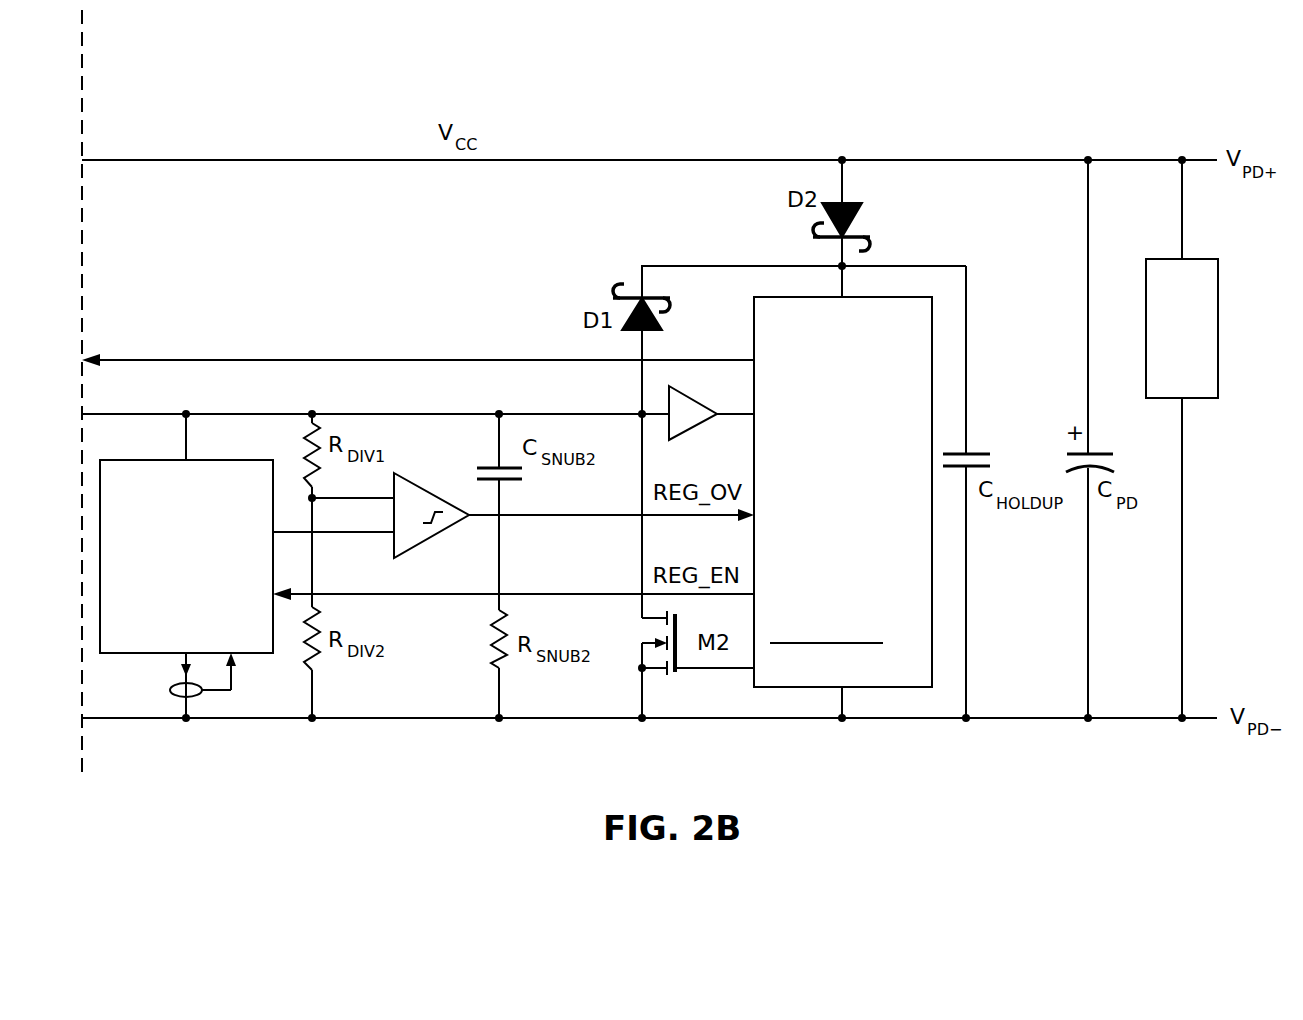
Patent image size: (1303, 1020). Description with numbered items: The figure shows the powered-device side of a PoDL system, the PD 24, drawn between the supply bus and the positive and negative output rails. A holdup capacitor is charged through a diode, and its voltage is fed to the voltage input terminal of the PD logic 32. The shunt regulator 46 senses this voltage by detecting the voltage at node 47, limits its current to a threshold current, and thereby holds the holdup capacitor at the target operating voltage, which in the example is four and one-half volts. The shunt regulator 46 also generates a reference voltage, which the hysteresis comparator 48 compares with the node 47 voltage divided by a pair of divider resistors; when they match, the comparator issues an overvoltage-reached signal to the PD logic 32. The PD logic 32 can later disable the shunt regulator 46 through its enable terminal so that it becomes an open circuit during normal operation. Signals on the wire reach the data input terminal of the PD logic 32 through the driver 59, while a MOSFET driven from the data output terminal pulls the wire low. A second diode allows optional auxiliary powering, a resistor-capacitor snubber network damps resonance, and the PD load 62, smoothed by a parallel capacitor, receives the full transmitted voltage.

The PD 24 is at (256, 109).
The PD logic 32 is at (859, 576).
The shunt regulator 46 is at (138, 657).
The node 47 is at (188, 411).
The hysteresis comparator 48 is at (435, 538).
The driver 59 is at (699, 436).
The PD load 62 is at (1195, 400).